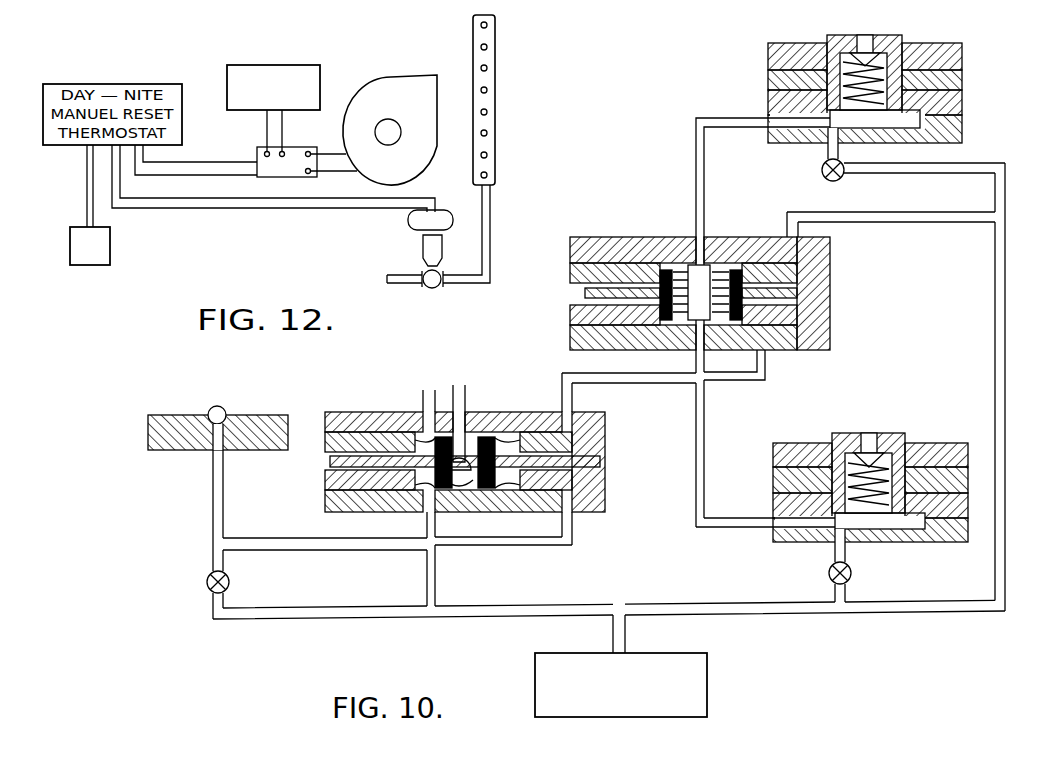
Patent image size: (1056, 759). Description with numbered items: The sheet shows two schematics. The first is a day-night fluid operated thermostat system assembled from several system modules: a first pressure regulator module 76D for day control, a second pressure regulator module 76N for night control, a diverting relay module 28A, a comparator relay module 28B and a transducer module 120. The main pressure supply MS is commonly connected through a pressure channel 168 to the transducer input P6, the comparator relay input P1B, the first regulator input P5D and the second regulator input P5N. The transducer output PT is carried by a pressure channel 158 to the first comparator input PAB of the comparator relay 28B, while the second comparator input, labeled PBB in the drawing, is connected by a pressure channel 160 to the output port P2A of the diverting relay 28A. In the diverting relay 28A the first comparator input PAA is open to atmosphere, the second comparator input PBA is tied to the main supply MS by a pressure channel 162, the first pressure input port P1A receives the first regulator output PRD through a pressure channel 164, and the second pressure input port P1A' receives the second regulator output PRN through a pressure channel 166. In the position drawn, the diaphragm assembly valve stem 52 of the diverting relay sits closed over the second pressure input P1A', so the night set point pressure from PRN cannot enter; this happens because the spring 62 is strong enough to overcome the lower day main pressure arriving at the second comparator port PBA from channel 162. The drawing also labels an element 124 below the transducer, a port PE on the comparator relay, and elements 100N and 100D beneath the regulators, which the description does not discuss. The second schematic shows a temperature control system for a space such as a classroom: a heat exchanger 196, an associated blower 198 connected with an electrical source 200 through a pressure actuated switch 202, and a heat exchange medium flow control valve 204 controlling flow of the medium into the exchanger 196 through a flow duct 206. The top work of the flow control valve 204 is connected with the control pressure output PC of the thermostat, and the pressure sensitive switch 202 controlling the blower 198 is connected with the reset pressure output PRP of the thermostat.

In FIG. 12, the pressure channel 168 is at (87, 183).
In FIG. 10, the pressure channel 168 is at (779, 618).
In FIG. 12, the main pressure supply MS is at (90, 246).
In FIG. 10, the main pressure supply MS is at (758, 693).
In FIG. 12, the control pressure output PC is at (116, 209).
In FIG. 10, the control pressure output PC is at (434, 397).
In FIG. 12, the reset pressure output PRP is at (143, 162).
In FIG. 12, the pressure actuated switch 202 is at (290, 158).
In FIG. 12, the electrical source 200 is at (320, 70).
In FIG. 12, the blower 198 is at (410, 76).
In FIG. 12, the heat exchanger 196 is at (496, 118).
In FIG. 12, the flow duct 206 is at (491, 222).
In FIG. 12, the heat exchange medium flow control valve 204 is at (401, 258).
In FIG. 10, the transducer module 120 is at (140, 411).
In FIG. 10, the restrictor valve 124 is at (230, 583).
In FIG. 10, the transducer input P6 is at (213, 619).
In FIG. 10, the transducer output PT is at (316, 552).
In FIG. 10, the comparator relay module 28B is at (398, 402).
In FIG. 10, the exhaust pressure line PE is at (467, 405).
In FIG. 10, the comparator relay input P1B is at (436, 566).
In FIG. 10, the pressure channel 158 is at (523, 547).
In FIG. 10, the first comparator input PAB is at (574, 533).
In FIG. 10, the pressure line PBB is at (573, 396).
In FIG. 10, the pressure channel 160 is at (631, 384).
In FIG. 10, the first pressure input port P1A is at (677, 438).
In FIG. 10, the output port P2A is at (766, 378).
In FIG. 10, the pressure channel 164 is at (706, 467).
In FIG. 10, the diverting relay module 28A is at (651, 226).
In FIG. 10, the diaphragm assembly valve stem 52 is at (673, 335).
In FIG. 10, the spring 62 is at (714, 335).
In FIG. 10, the first comparator input PAA is at (798, 350).
In FIG. 10, the second comparator input PBA is at (800, 228).
In FIG. 10, the pressure channel 162 is at (919, 224).
In FIG. 10, the pressure channel 166 is at (696, 160).
In FIG. 10, the second regulator output PRN is at (742, 118).
In FIG. 10, the second pressure input port P1A' is at (735, 205).
In FIG. 10, the second pressure regulator module 76N is at (1032, 72).
In FIG. 10, the restrictor valve 100N is at (822, 172).
In FIG. 10, the second regulator input P5N is at (888, 174).
In FIG. 10, the first pressure regulator module 76D is at (968, 420).
In FIG. 10, the first regulator output PRD is at (747, 529).
In FIG. 10, the restrictor valve 100D is at (829, 575).
In FIG. 10, the first regulator input P5D is at (849, 593).